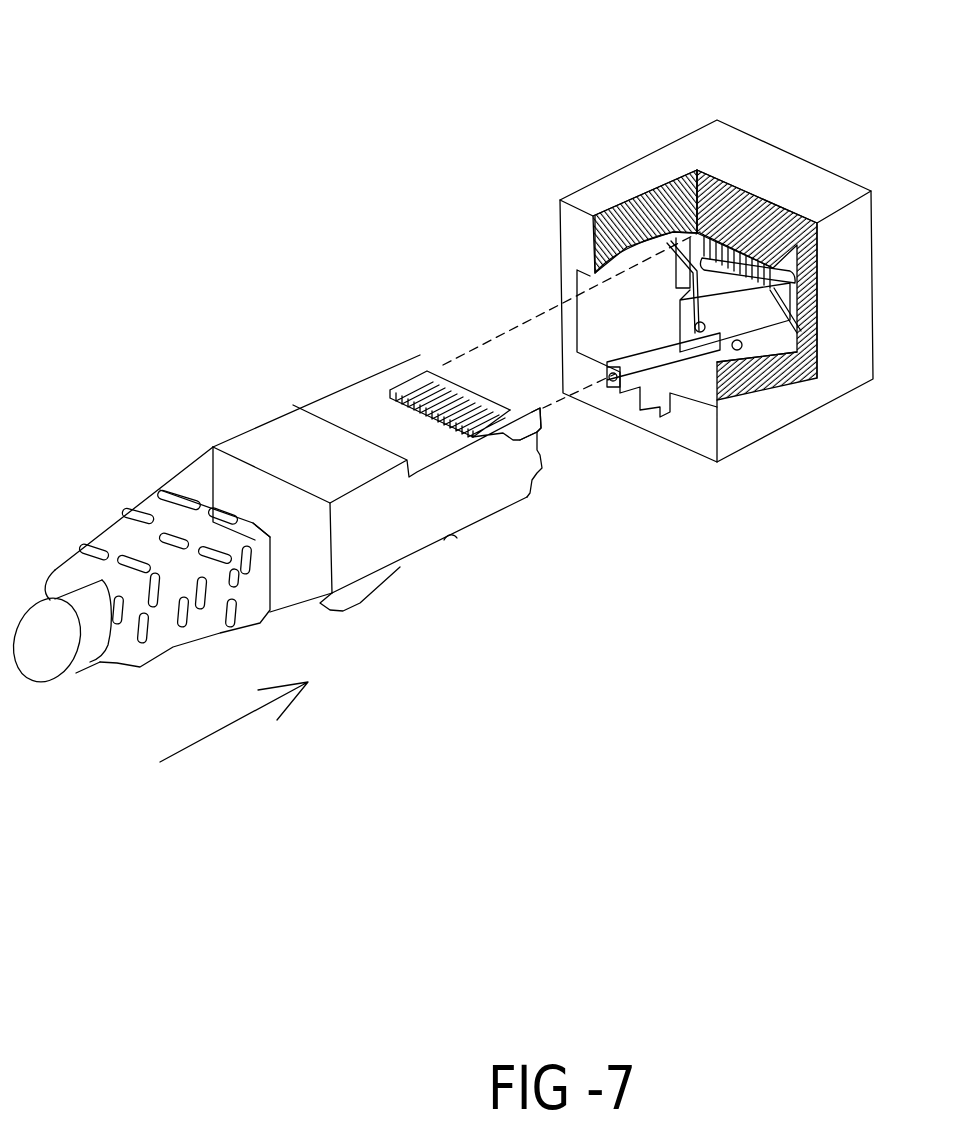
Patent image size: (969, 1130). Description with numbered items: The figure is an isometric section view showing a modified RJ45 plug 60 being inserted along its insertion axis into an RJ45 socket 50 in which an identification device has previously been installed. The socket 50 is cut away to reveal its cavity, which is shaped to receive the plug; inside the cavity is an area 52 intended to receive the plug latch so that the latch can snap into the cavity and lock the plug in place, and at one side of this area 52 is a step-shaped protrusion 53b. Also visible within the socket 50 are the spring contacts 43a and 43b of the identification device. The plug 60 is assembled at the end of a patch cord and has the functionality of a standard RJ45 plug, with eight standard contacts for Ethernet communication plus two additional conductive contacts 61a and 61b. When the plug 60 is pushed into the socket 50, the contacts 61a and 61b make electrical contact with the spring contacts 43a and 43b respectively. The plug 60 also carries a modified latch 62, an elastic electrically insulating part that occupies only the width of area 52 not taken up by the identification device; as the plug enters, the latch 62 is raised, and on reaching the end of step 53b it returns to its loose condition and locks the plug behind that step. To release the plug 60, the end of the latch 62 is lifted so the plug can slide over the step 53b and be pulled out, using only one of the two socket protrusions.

The RJ45 socket 50 is at (714, 231).
The spring contact 43a is at (784, 375).
The spring contact 43b is at (582, 242).
The area of the socket cavity 52 is at (735, 392).
The protrusion 53b is at (663, 422).
The modified RJ45 plug 60 is at (351, 413).
The additional conductive contact 61a is at (576, 498).
The additional conductive contact 61b is at (442, 333).
The modified latch 62 is at (439, 615).